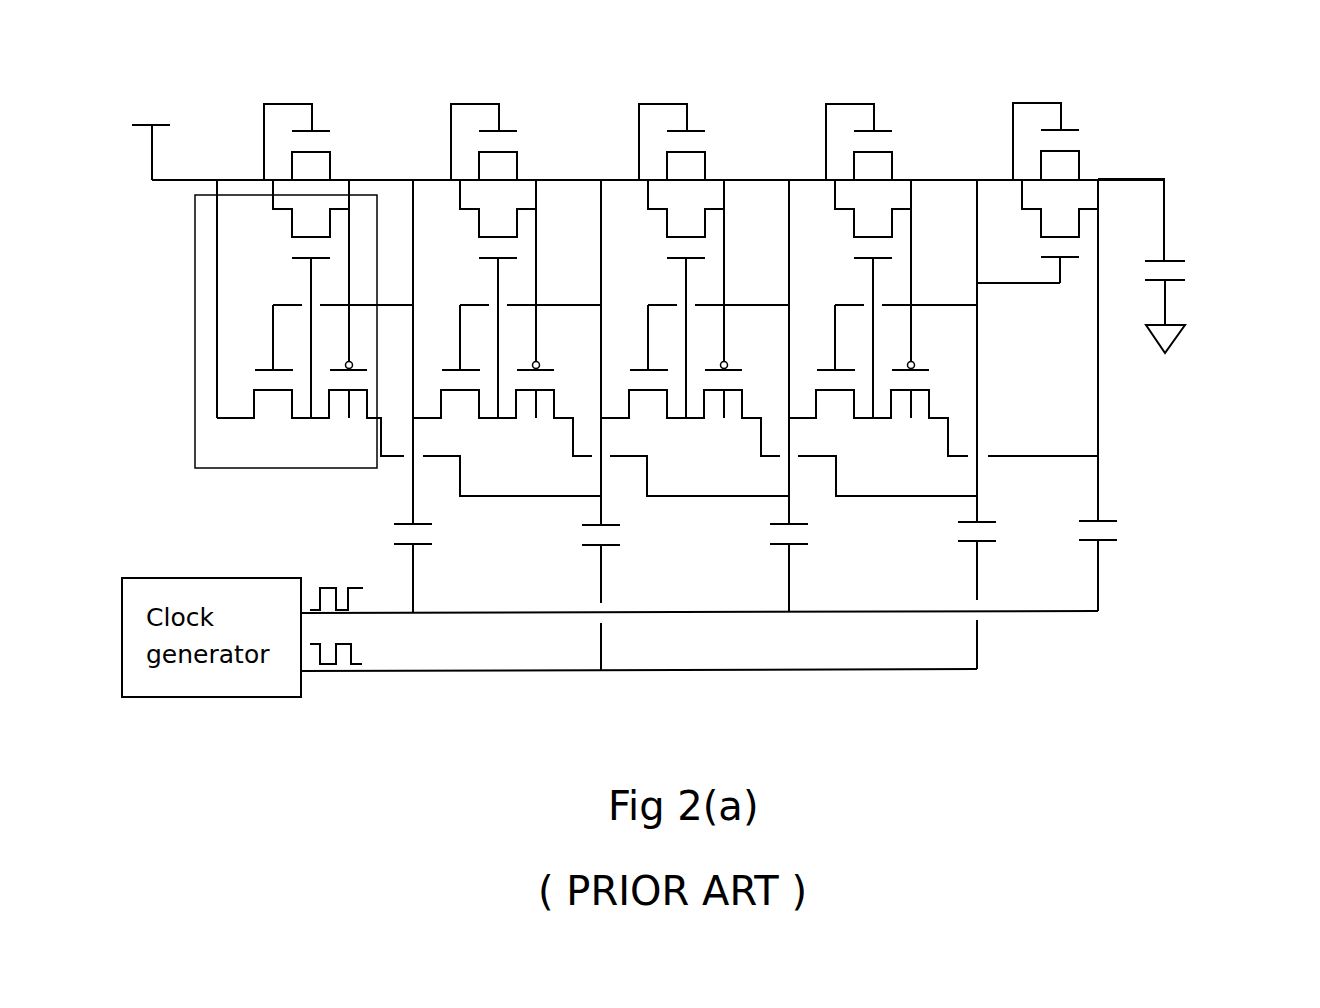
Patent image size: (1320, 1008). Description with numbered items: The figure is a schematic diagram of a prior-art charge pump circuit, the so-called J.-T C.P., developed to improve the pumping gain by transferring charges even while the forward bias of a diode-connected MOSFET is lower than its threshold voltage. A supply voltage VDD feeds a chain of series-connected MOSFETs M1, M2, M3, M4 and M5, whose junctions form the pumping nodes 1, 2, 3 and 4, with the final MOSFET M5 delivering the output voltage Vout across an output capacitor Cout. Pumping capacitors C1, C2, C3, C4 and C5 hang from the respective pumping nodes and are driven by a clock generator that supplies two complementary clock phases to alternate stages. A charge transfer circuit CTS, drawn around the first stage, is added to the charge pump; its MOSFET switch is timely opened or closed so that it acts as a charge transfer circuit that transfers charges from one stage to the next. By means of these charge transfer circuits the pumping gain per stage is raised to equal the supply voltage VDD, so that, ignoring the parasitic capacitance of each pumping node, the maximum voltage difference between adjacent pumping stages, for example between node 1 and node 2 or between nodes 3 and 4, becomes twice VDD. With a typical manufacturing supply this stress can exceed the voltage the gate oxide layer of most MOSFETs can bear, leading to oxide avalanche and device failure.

The first charge transfer transistor M1 is at (313, 238).
The second charge transfer transistor M2 is at (498, 238).
The third charge transfer transistor M3 is at (685, 238).
The fourth charge transfer transistor M4 is at (872, 238).
The fifth charge transfer transistor M5 is at (1042, 170).
The first pumping capacitor C1 is at (393, 551).
The second pumping capacitor C2 is at (579, 552).
The third pumping capacitor C3 is at (766, 551).
The fourth pumping capacitor C4 is at (954, 550).
The fifth pumping capacitor C5 is at (1077, 566).
The output capacitor Cout is at (1203, 307).
The charge transfer circuit CTS is at (250, 448).
The node 1 is at (406, 378).
The node 2 is at (593, 407).
The node 3 is at (780, 377).
The node 4 is at (966, 406).
The voltage source VDD is at (147, 138).
The output voltage Vout is at (1149, 192).